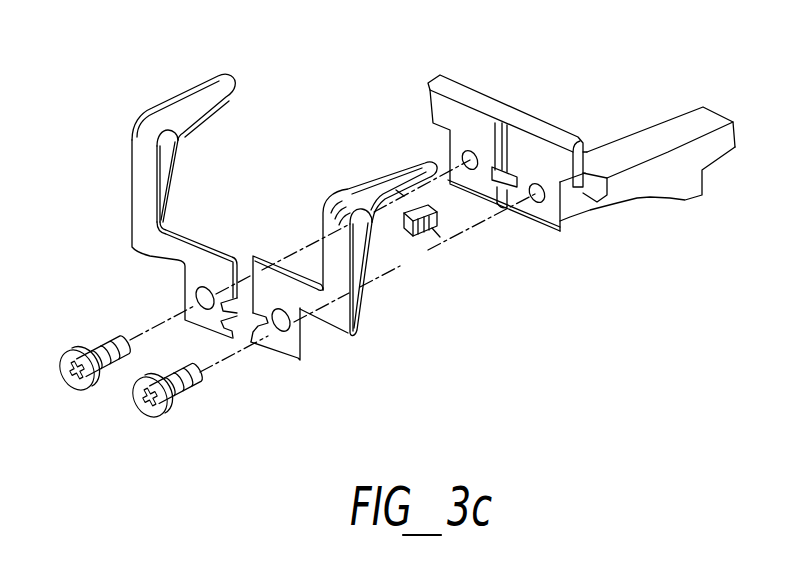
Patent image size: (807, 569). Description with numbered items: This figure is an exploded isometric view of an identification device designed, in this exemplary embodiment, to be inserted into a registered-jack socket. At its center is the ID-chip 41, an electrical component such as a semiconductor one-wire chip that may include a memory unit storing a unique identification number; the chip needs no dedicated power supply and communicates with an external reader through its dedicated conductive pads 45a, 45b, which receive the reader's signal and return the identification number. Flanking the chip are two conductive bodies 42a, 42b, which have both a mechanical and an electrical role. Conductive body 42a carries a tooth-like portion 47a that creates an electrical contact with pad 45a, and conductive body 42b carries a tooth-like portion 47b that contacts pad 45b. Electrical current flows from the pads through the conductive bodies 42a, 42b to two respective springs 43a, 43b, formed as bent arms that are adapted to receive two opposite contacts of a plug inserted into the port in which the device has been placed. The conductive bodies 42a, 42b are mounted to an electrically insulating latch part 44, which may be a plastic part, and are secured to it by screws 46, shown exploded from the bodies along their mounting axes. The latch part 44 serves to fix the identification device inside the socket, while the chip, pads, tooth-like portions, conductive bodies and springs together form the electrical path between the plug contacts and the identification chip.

The ID-chip 41 is at (420, 212).
The conductive body 42a is at (333, 300).
The conductive body 42b is at (152, 234).
The spring 43a is at (371, 248).
The spring 43b is at (180, 165).
The electrically insulating latch part 44 is at (666, 142).
The conductive pad 45a is at (440, 237).
The conductive pad 45b is at (404, 194).
The screws 46 is at (90, 393).
The tooth-like portion 47a is at (233, 338).
The tooth-like portion 47b is at (244, 344).